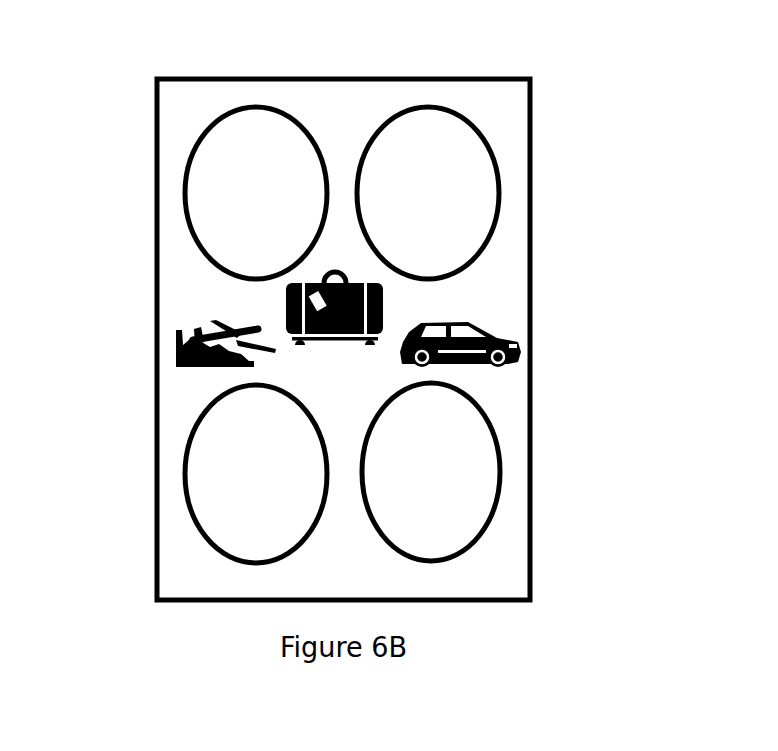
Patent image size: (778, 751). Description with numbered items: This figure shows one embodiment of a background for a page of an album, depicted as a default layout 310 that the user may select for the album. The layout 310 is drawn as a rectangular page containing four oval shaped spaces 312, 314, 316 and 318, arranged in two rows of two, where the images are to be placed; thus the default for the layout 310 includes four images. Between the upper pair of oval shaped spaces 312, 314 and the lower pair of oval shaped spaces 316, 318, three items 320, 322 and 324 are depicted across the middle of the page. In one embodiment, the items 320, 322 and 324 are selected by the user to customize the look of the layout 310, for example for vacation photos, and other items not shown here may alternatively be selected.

The layout 310 is at (370, 48).
The oval shaped space 312 is at (220, 118).
The oval shaped space 314 is at (455, 110).
The oval shaped space 316 is at (188, 452).
The oval shaped space 318 is at (488, 483).
The item 320 is at (177, 358).
The item 322 is at (383, 310).
The item 324 is at (498, 336).